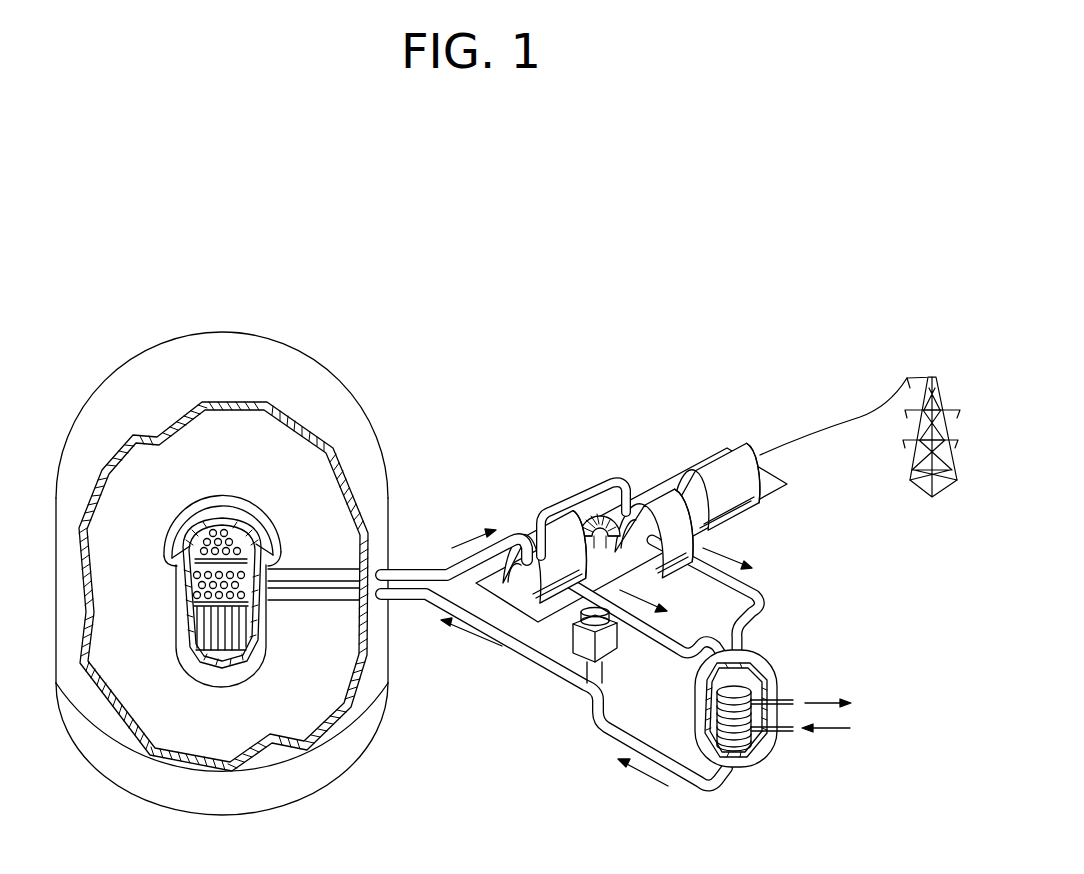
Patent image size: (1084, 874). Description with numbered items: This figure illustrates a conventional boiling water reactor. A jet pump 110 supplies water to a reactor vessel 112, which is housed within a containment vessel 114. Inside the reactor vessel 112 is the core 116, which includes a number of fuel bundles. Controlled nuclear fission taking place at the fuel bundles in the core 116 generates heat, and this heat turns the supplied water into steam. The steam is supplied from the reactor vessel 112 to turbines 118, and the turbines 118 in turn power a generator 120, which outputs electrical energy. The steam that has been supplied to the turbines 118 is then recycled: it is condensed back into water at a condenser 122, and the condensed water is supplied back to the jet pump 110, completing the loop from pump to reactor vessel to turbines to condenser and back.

The jet pump 110 is at (610, 643).
The reactor vessel 112 is at (222, 506).
The containment vessel 114 is at (133, 787).
The core 116 is at (220, 637).
The turbines 118 is at (647, 507).
The generator 120 is at (712, 463).
The condenser 122 is at (767, 757).